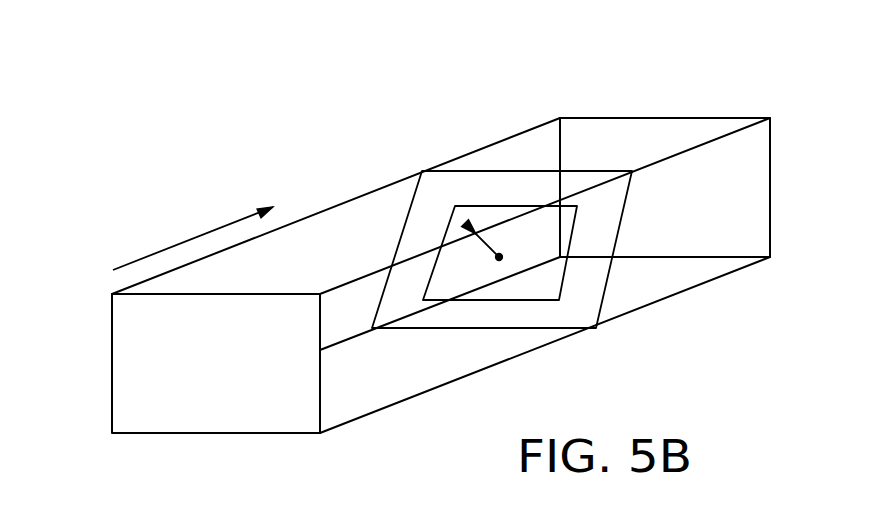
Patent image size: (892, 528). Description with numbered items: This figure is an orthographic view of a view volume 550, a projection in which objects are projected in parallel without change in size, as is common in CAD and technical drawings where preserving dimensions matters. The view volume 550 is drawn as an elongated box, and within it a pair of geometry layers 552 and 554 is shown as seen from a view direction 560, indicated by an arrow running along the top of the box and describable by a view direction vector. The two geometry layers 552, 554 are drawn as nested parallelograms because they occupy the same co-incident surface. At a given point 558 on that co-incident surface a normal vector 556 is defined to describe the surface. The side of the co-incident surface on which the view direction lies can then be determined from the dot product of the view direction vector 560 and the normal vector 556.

The view volume 550 is at (177, 87).
The geometry layer 552 is at (619, 222).
The geometry layer 554 is at (566, 262).
The normal vector 556 is at (465, 223).
The point 558 is at (499, 257).
The view direction 560 is at (186, 237).